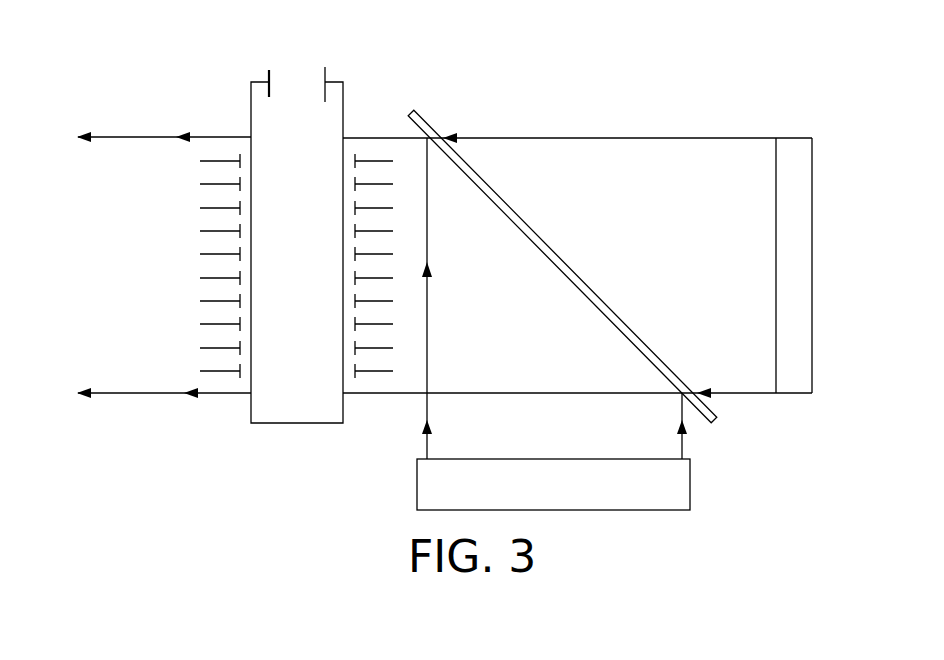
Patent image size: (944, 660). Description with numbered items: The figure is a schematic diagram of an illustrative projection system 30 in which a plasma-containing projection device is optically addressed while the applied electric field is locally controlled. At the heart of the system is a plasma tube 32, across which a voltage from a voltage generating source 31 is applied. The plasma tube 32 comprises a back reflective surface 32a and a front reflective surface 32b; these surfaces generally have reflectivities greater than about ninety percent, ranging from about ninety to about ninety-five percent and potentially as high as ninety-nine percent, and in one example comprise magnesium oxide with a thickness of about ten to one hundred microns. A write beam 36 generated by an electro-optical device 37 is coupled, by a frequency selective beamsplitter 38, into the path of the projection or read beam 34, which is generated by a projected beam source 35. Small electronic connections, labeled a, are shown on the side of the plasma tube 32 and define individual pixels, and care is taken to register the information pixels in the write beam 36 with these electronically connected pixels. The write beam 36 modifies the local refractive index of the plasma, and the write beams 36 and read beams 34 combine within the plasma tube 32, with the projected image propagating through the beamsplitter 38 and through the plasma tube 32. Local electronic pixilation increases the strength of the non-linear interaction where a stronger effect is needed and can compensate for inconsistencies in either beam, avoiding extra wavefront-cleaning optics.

The projection system 30 is at (82, 262).
The voltage generating source 31 is at (300, 67).
The plasma tube 32 is at (343, 112).
The back reflective surface 32a is at (345, 402).
The front reflective surface 32b is at (250, 400).
The read beam 34 is at (513, 137).
The projected beam source 35 is at (806, 264).
The write beam 36 is at (683, 441).
The electro-optical device 37 is at (575, 496).
The frequency selective beamsplitter 38 is at (582, 276).